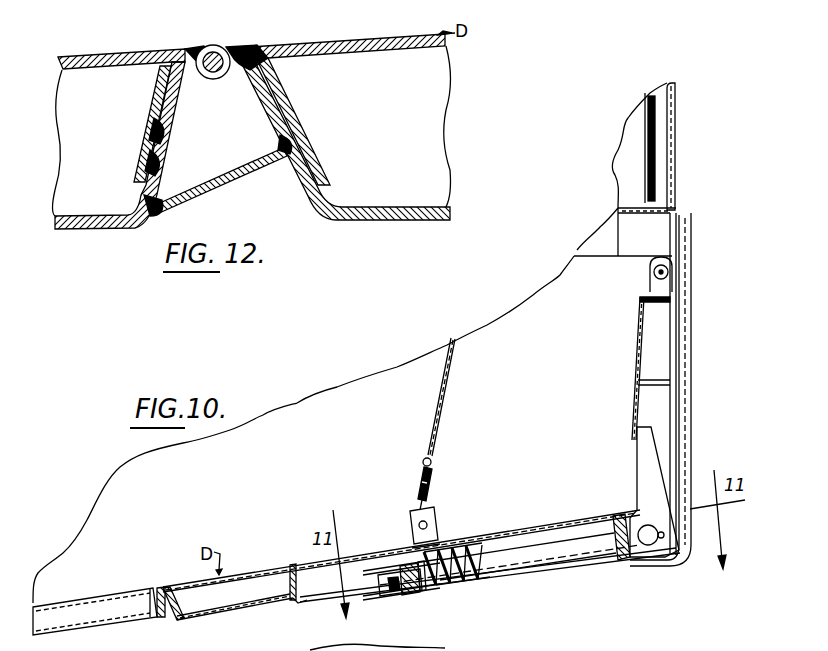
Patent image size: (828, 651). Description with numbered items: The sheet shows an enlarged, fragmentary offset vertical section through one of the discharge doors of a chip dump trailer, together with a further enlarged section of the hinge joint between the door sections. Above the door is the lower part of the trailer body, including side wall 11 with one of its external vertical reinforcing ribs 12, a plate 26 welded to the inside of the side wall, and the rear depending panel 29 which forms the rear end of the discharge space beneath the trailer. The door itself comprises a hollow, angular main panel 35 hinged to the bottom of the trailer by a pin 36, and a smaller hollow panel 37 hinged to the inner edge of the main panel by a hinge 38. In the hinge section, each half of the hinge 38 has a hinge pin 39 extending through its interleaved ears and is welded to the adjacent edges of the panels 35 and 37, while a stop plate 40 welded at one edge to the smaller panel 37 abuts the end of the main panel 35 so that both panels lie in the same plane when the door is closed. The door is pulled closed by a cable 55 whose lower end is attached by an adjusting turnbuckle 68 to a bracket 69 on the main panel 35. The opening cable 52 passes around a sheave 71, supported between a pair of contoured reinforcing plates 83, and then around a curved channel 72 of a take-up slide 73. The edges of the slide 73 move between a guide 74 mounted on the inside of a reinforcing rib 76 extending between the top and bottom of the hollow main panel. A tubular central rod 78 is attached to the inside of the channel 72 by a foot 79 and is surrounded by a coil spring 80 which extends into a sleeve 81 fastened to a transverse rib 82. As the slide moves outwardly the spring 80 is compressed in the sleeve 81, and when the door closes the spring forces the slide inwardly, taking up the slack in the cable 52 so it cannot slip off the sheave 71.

In FIG. 10, the side wall 11 is at (660, 152).
In FIG. 10, the rib 12 is at (678, 96).
In FIG. 10, the plate 26 is at (648, 147).
In FIG. 10, the rear depending panel 29 is at (340, 386).
In FIG. 12, the main panel 35 is at (327, 45).
In FIG. 10, the main panel 35 is at (643, 331).
In FIG. 10, the pin 36 is at (660, 263).
In FIG. 12, the smaller hollow panel 37 is at (80, 58).
In FIG. 10, the smaller hollow panel 37 is at (76, 600).
In FIG. 12, the hinge 38 is at (200, 45).
In FIG. 10, the hinge 38 is at (162, 588).
In FIG. 12, the hinge pin 39 is at (218, 44).
In FIG. 12, the stop plate 40 is at (206, 190).
In FIG. 10, the stop plate 40 is at (165, 612).
In FIG. 10, the cable 52 is at (690, 319).
In FIG. 10, the cable 55 is at (440, 389).
In FIG. 10, the adjusting turnbuckle 68 is at (419, 478).
In FIG. 10, the bracket 69 is at (414, 520).
In FIG. 10, the sheave 71 is at (680, 556).
In FIG. 10, the curved channel 72 is at (400, 594).
In FIG. 10, the take-up slide 73 is at (378, 578).
In FIG. 10, the guide 74 is at (372, 562).
In FIG. 10, the reinforcing rib 76 is at (304, 603).
In FIG. 10, the tubular central rod 78 is at (470, 586).
In FIG. 10, the foot 79 is at (420, 590).
In FIG. 10, the coil spring 80 is at (445, 590).
In FIG. 10, the sleeve 81 is at (570, 534).
In FIG. 10, the rib 82 is at (618, 566).
In FIG. 10, the reinforcing plate 83 is at (640, 442).